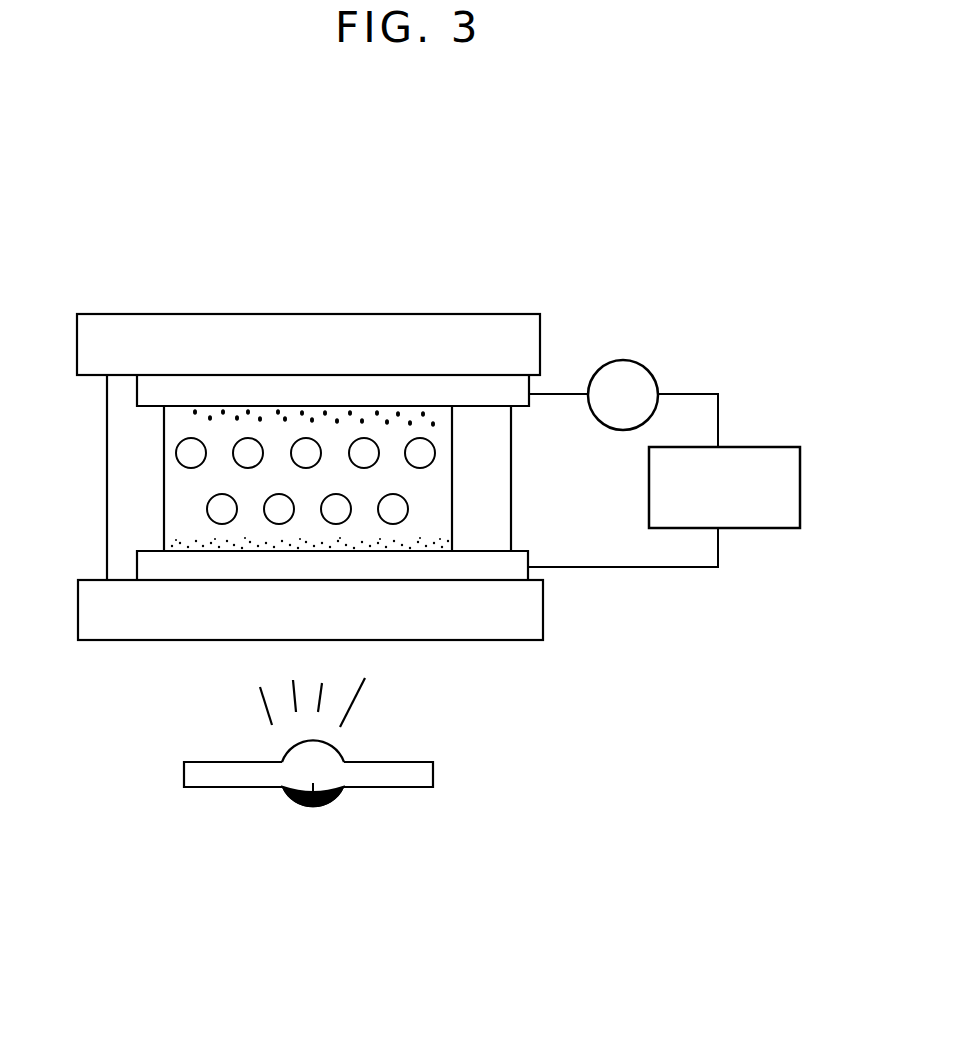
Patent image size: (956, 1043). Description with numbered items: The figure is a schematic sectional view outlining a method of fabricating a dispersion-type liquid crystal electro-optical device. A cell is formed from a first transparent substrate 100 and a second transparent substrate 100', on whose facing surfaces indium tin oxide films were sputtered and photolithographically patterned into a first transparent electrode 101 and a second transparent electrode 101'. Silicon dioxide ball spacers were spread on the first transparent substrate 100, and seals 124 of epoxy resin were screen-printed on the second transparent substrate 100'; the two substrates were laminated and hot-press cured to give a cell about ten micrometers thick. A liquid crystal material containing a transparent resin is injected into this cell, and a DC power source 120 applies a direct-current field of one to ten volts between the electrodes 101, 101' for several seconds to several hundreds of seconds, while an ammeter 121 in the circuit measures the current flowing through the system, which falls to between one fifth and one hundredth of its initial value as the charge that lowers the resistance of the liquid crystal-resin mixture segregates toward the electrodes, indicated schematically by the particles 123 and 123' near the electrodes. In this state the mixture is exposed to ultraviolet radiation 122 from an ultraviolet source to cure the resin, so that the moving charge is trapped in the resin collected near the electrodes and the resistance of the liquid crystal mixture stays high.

The first transparent substrate 100 is at (308, 300).
The second transparent substrate 100' is at (295, 653).
The first transparent electrode 101 is at (333, 334).
The second transparent electrode 101' is at (351, 639).
The fine particles (upper layer) 123 is at (309, 332).
The fine particles (lower layer) 123' is at (297, 626).
The seal 124 is at (118, 455).
The ammeter 121 is at (620, 360).
The DC power source 120 is at (800, 490).
The ultraviolet radiation 122 is at (342, 803).